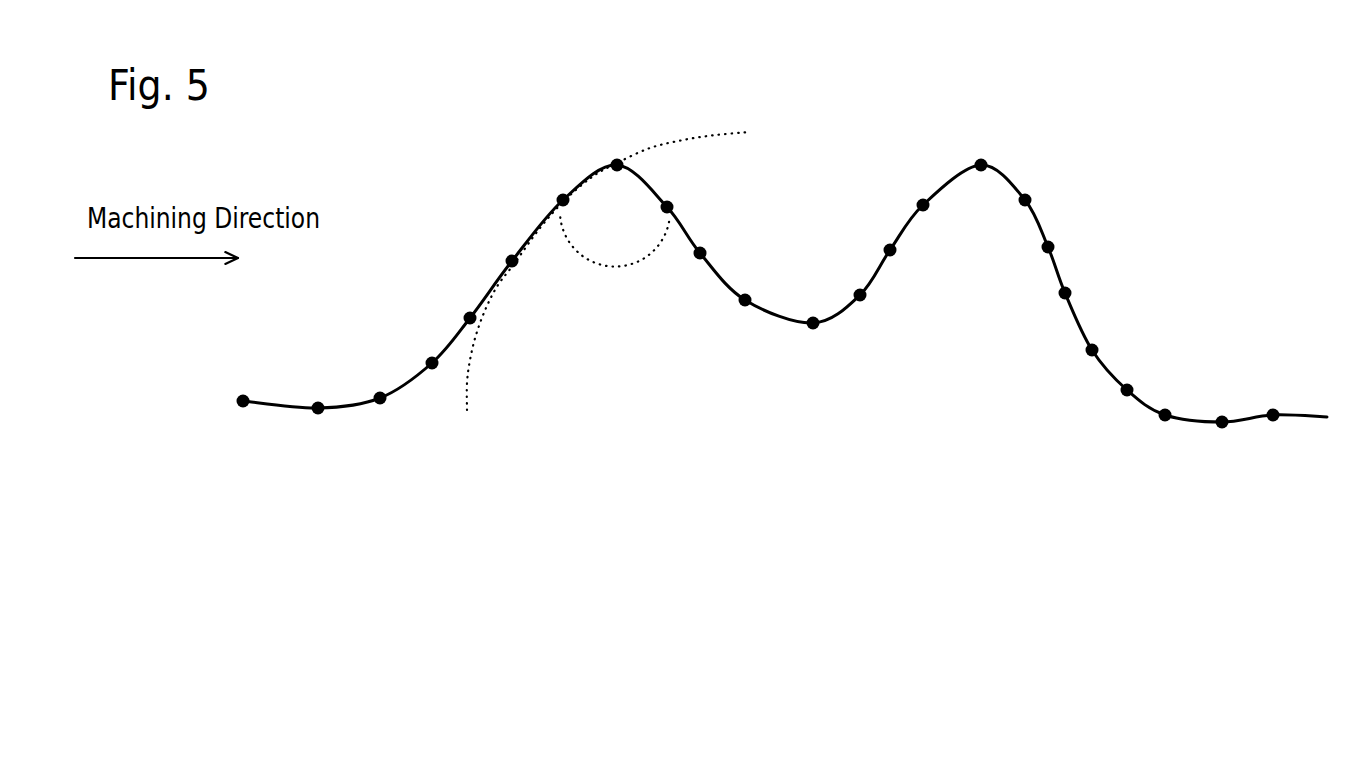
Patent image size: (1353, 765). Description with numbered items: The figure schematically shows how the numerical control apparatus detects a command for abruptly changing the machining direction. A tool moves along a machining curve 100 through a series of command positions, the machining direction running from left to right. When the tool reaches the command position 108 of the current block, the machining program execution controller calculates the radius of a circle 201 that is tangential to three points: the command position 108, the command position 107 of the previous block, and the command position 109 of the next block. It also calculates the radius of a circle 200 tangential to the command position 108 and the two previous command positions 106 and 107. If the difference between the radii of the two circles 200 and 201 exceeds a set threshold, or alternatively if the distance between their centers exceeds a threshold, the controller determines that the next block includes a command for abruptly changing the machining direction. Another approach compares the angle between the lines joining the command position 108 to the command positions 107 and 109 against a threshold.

The machining curve 100 is at (238, 401).
The command position 106 is at (506, 257).
The command position of the previous block 107 is at (559, 196).
The command position of the current block 108 is at (616, 160).
The command position of the next block 109 is at (674, 206).
The circle 200 is at (467, 387).
The circle 201 is at (640, 263).